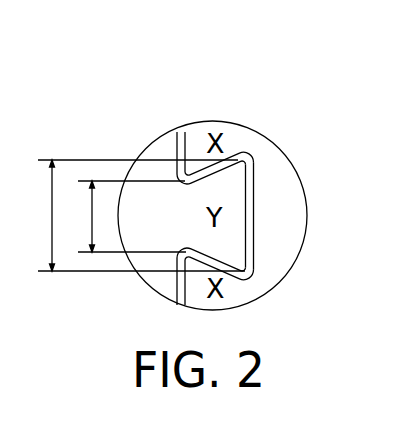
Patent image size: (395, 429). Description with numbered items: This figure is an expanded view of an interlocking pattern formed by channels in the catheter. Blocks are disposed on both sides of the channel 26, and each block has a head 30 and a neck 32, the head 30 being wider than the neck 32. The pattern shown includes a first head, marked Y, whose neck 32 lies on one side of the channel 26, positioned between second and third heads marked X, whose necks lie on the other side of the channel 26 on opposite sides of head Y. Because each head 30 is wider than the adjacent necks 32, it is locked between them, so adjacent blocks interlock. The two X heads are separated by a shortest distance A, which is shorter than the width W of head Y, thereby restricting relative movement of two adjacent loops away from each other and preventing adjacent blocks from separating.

The channel 26 is at (178, 132).
The head 30 is at (237, 217).
The neck 32 is at (183, 213).